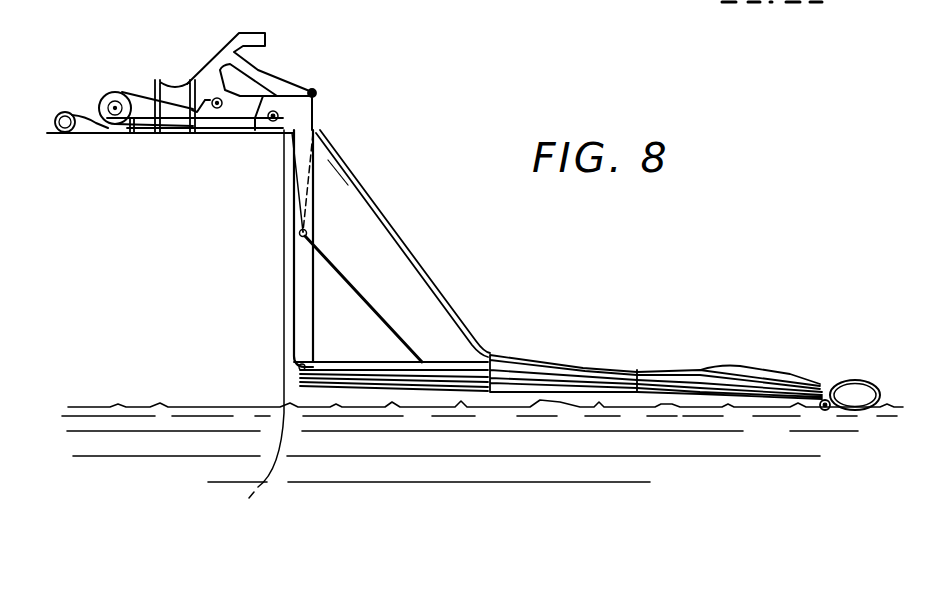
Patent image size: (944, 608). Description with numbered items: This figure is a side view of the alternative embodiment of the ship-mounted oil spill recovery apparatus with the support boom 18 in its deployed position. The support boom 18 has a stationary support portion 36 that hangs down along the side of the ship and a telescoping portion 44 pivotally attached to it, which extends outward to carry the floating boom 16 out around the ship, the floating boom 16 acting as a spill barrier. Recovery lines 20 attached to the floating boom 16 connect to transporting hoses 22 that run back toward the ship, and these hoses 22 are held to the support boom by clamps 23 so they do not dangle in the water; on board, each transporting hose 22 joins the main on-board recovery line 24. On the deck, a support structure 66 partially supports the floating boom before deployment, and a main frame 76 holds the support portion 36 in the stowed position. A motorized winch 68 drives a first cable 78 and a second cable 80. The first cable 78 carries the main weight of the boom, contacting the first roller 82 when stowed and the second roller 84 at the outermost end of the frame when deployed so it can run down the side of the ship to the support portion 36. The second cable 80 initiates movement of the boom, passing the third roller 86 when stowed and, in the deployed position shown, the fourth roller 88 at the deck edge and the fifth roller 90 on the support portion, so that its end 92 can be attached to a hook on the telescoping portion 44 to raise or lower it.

The floating boom 16 is at (852, 380).
The support boom 18 is at (608, 366).
The recovery lines 20 is at (815, 416).
The transporting hoses 22 is at (96, 120).
The clamps 23 is at (490, 355).
The main on-board recovery line 24 is at (65, 133).
The stationary support portion 36 is at (302, 175).
The telescoping portion 44 is at (395, 385).
The support structure 66 is at (173, 85).
The motorized winch 68 is at (119, 92).
The main frame 76 is at (225, 47).
The first cable 78 is at (142, 90).
The second cable 80 is at (137, 133).
The first roller 82 is at (236, 72).
The second roller 84 is at (316, 90).
The third roller 86 is at (272, 131).
The fourth roller 88 is at (315, 133).
The fifth roller 90 is at (308, 234).
The end of second cable 92 is at (422, 362).